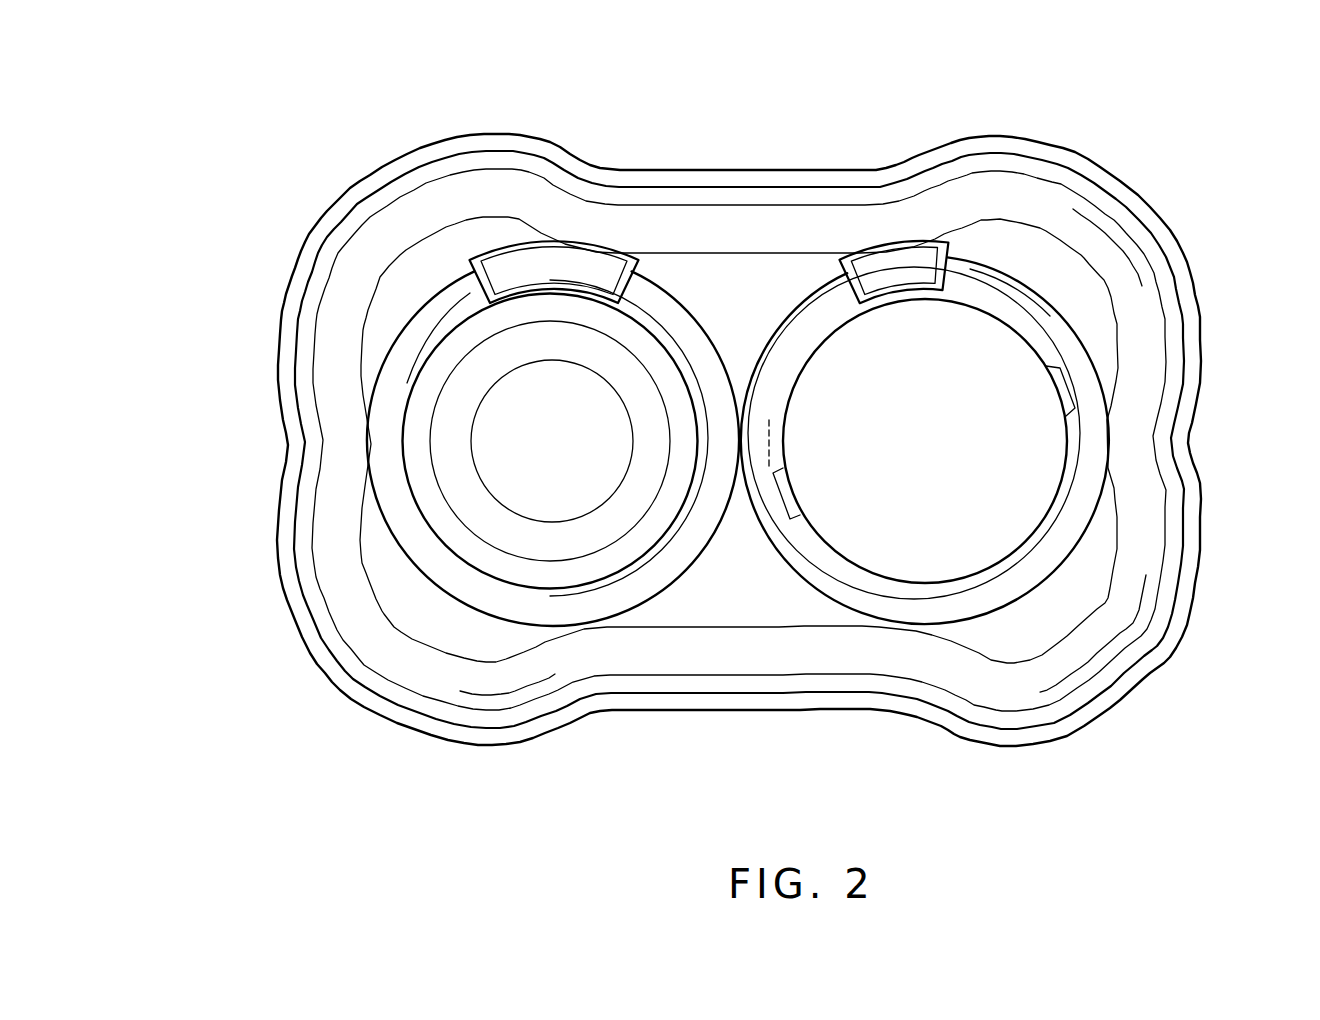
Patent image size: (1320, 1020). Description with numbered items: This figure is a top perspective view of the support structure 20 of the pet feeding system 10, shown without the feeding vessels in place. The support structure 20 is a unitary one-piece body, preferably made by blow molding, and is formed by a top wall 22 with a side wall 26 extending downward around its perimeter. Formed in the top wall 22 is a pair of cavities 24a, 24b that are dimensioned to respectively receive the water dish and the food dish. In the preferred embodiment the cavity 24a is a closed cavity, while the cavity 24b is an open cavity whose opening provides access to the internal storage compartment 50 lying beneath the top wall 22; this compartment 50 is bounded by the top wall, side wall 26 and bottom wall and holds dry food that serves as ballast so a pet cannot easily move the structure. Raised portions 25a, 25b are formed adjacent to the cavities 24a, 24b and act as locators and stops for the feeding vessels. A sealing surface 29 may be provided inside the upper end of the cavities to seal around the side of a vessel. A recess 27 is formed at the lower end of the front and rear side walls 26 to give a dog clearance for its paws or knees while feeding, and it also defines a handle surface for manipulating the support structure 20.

The pet feeding system 10 is at (270, 162).
The support structure 20 is at (413, 673).
The top wall 22 is at (743, 578).
The cavity 24a is at (393, 540).
The cavity 24b is at (1067, 560).
The raised portion 25a is at (530, 253).
The raised portion 25b is at (890, 257).
The side wall 26 is at (1150, 340).
The recess 27 is at (721, 658).
The sealing surface 29 is at (1000, 320).
The internal storage compartment 50 is at (1046, 478).